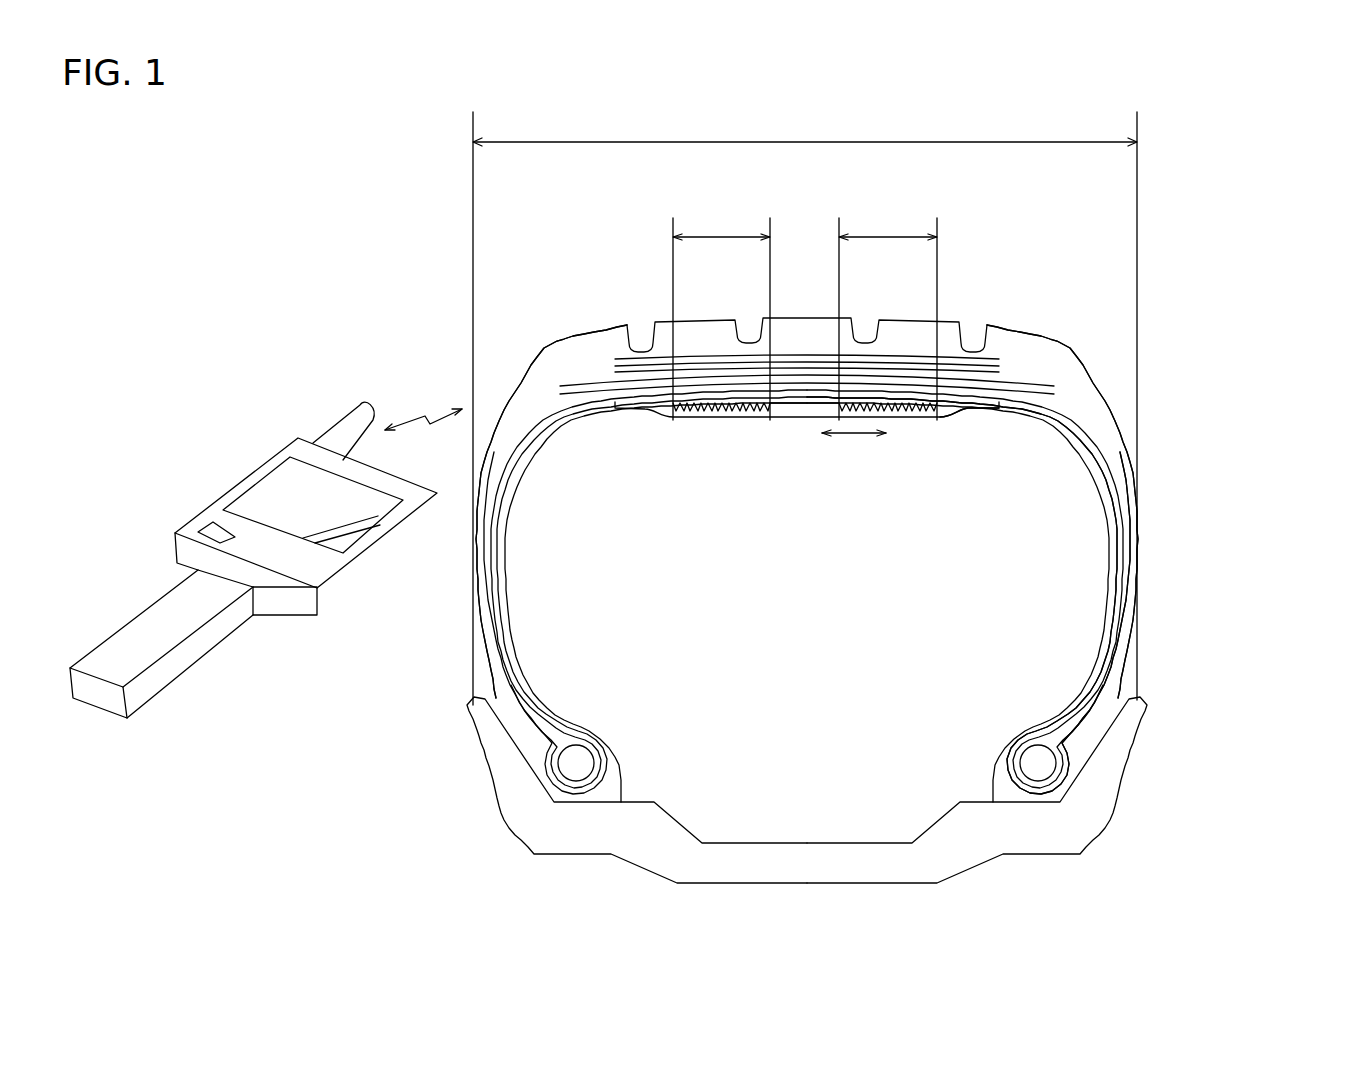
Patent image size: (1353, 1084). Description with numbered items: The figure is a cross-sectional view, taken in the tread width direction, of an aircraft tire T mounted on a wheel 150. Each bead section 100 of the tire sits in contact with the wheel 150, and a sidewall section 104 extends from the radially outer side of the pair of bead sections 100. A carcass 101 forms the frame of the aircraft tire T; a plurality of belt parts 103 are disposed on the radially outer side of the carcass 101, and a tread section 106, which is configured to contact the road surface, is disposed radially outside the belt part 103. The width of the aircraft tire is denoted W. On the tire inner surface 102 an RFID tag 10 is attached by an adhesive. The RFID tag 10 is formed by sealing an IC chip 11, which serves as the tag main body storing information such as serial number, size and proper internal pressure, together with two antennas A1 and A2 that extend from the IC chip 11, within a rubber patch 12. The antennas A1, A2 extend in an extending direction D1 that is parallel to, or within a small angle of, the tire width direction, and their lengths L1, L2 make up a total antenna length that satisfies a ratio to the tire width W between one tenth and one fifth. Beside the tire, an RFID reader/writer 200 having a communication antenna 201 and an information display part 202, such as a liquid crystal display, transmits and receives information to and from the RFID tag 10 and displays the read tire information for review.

The RFID tag 10 is at (815, 425).
The IC chip 11 is at (790, 412).
The rubber patch 12 is at (943, 418).
The bead section 100 is at (578, 708).
The carcass 101 is at (490, 570).
The tire inner surface 102 is at (1036, 433).
The belt part 103 is at (567, 392).
The sidewall section 104 is at (460, 615).
The tread section 106 is at (1042, 323).
The wheel 150 is at (650, 852).
The RFID reader/writer 200 is at (262, 445).
The communication antenna 201 is at (343, 423).
The information display part 202 is at (293, 507).
The antenna A1 is at (693, 418).
The antenna A2 is at (900, 418).
The extending direction D1 is at (854, 452).
The antenna length L1 is at (721, 312).
The antenna length L2 is at (888, 312).
The tire width W is at (805, 407).
The aircraft tire T is at (1150, 590).